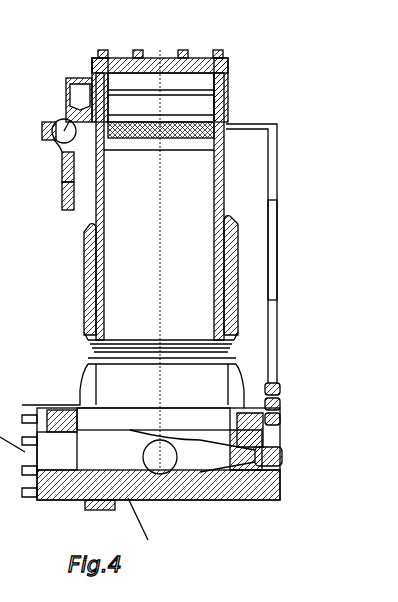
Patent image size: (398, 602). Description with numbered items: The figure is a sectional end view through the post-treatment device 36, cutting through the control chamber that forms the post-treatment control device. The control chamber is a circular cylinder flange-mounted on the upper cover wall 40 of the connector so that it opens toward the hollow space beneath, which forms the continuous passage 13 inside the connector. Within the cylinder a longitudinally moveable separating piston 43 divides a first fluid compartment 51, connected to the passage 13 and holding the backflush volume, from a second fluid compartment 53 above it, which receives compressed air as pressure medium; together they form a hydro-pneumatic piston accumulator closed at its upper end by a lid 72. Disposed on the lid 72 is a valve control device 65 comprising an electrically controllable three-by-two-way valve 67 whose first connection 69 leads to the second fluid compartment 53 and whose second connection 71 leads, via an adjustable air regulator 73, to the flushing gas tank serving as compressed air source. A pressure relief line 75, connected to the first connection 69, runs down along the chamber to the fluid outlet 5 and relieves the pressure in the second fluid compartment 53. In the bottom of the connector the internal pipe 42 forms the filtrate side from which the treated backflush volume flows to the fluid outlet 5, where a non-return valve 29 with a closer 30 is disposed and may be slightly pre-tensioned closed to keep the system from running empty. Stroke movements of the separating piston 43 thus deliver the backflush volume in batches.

The lid 72 is at (120, 60).
The separating piston 43 is at (146, 136).
The first fluid compartment 51 is at (185, 300).
The first connection 69 is at (60, 118).
The valve control device 65 is at (56, 118).
The 3/2-way valve 67 is at (54, 150).
The second connection 71 is at (62, 160).
The adjustable air regulator 73 is at (66, 190).
The second fluid compartment 53 is at (230, 104).
The cover wall 40 is at (66, 410).
The internal pipe 42 is at (178, 476).
The closer 30 is at (283, 455).
The fluid outlet 5 is at (288, 462).
The non-return valve 29 is at (258, 500).
The post-treatment device 36 is at (288, 136).
The pressure relief line 75 is at (278, 200).
The passage 13 is at (232, 380).